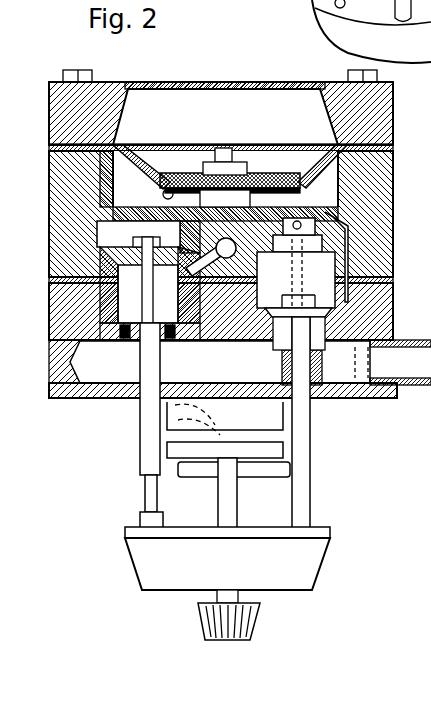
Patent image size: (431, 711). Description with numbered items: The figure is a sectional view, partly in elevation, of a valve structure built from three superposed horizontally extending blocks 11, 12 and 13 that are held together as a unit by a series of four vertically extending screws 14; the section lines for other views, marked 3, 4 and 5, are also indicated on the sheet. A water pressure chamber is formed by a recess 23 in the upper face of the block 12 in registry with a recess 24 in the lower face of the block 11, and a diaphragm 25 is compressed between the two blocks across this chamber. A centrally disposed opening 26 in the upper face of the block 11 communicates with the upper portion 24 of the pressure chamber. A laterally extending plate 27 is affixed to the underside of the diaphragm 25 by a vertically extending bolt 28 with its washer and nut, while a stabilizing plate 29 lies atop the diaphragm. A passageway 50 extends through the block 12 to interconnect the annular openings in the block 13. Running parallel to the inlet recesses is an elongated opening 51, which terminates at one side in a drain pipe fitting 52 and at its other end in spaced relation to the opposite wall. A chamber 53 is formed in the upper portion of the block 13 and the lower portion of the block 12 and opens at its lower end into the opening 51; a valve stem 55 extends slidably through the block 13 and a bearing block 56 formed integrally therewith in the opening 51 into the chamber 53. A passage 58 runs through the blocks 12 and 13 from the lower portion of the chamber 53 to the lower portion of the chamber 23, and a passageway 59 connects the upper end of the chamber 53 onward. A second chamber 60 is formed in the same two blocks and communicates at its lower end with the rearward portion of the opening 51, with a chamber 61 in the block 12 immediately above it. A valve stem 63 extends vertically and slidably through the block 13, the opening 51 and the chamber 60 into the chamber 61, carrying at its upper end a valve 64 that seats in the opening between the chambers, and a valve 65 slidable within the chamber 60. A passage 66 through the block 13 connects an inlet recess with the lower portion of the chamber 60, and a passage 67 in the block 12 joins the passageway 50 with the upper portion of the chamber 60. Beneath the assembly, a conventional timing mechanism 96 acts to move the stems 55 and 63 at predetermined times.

The section line 3- 3 is at (222, 145).
The section line 4- 4 is at (52, 152).
The section line 5- 5 is at (50, 280).
The block 11 is at (385, 101).
The block 12 is at (394, 195).
The block 13 is at (394, 322).
The screws 14 is at (72, 68).
The recess 23 is at (318, 150).
The recess 24 is at (278, 84).
The diaphragm 25 is at (425, 159).
The opening 26 is at (212, 95).
The plate 27 is at (196, 176).
The bolt 28 is at (237, 150).
The stabilizing plate 29 is at (262, 175).
The passageway 50 is at (237, 247).
The elongated opening 51 is at (115, 395).
The drain pipe fitting 52 is at (408, 390).
The chamber 53 is at (263, 308).
The valve stem 55 is at (305, 428).
The bearing block 56 is at (328, 388).
The passage 58 is at (352, 237).
The passageway 59 is at (300, 216).
The chamber 60 is at (172, 302).
The chamber 61 is at (108, 220).
The valve stem 63 is at (150, 422).
The valve 64 is at (130, 233).
The valve 65 is at (168, 348).
The passage 66 is at (98, 314).
The passage 67 is at (158, 288).
The timing mechanism 96 is at (330, 556).